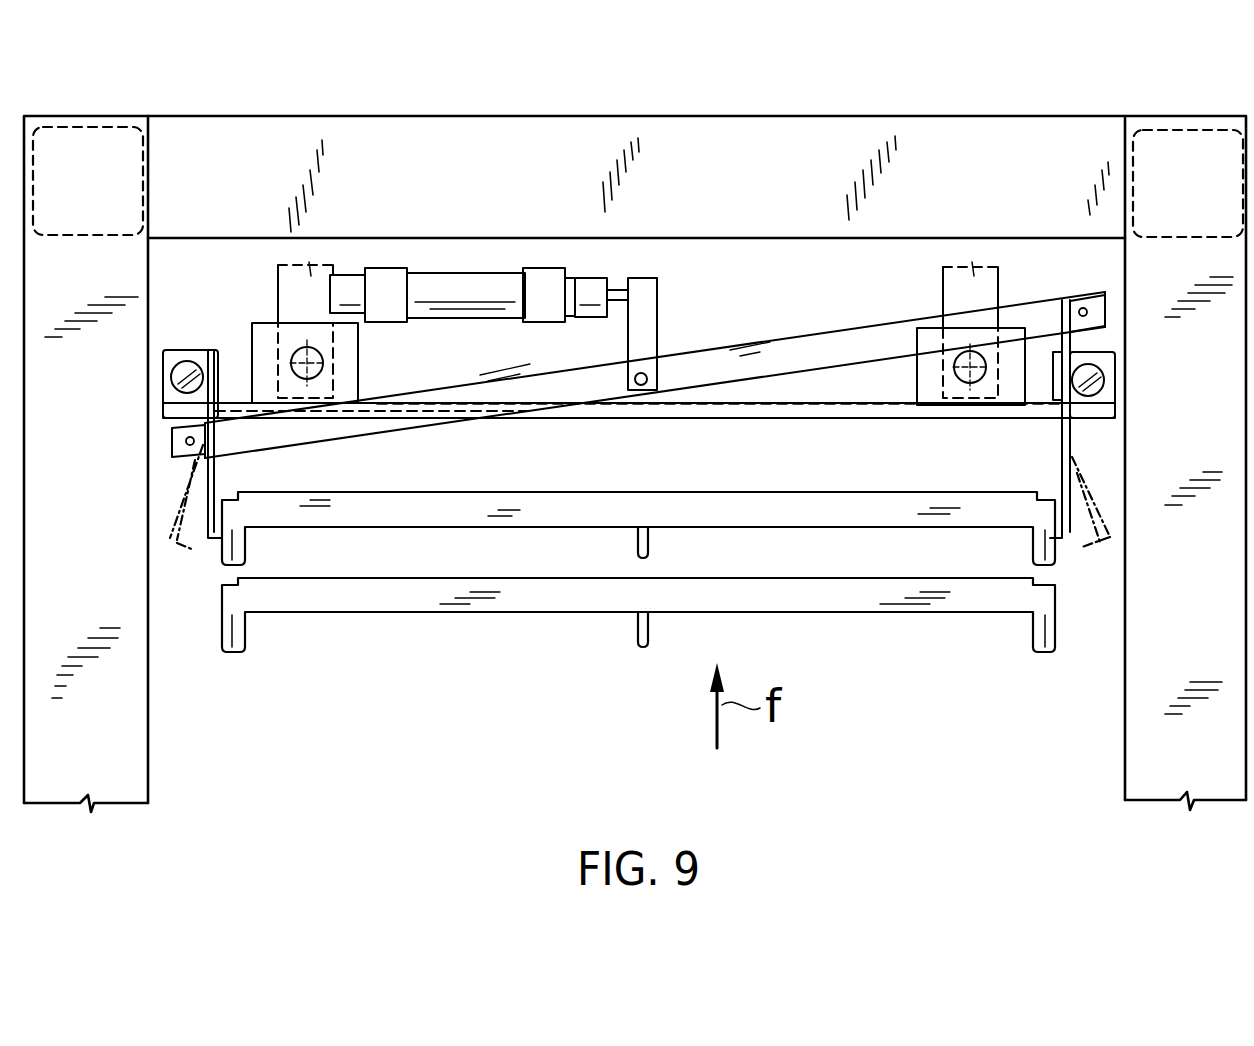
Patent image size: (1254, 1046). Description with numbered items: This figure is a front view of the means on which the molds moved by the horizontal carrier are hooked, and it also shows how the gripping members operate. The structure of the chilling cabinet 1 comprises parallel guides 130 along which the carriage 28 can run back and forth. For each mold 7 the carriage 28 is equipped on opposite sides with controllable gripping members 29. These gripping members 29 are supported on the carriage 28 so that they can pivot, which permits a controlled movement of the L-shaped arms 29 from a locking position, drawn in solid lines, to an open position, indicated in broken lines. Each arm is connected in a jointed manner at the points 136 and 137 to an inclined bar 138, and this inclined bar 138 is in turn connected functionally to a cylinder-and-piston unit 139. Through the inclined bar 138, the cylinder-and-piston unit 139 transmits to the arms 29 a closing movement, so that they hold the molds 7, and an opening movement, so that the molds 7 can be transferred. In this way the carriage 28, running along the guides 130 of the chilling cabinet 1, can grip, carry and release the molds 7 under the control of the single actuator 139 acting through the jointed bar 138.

The chilling cabinet 1 is at (667, 174).
The mold 7 is at (778, 512).
The carriage 28 is at (815, 410).
The gripping members 29 is at (203, 507).
The parallel guides 130 is at (302, 352).
The joint point 136 is at (187, 463).
The joint point 137 is at (1083, 308).
The inclined bar 138 is at (730, 367).
The cylinder-and-piston unit 139 is at (480, 292).